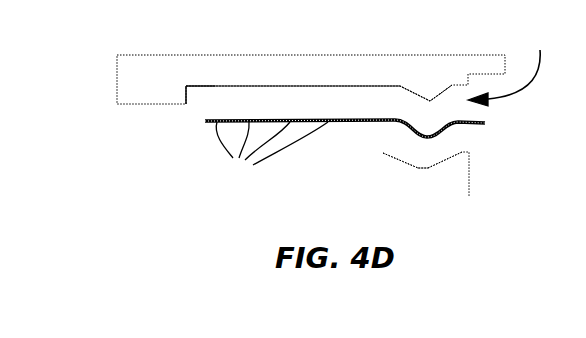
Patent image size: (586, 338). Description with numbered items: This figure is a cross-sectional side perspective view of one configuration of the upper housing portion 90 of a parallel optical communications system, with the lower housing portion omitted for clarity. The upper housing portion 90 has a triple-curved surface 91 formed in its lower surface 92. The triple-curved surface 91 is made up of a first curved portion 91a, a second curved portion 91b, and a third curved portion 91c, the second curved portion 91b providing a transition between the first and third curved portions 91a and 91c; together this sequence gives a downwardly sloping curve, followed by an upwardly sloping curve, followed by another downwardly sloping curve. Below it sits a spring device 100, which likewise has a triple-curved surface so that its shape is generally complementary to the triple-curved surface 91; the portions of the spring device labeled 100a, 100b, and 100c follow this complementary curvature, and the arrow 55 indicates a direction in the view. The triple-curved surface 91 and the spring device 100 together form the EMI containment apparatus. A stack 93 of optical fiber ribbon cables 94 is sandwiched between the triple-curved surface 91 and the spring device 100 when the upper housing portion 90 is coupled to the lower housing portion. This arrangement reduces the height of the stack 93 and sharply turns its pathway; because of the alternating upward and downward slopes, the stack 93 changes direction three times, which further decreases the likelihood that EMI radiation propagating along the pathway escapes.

The upper housing portion 90 is at (385, 56).
The triple-curved surface 91 is at (435, 101).
The first curved portion 91a is at (403, 88).
The second curved portion 91b is at (427, 103).
The third curved portion 91c is at (452, 90).
The lower surface 92 is at (200, 86).
The stack 93 is at (478, 121).
The optical fiber ribbon cables 94 is at (272, 153).
The spring device 100 is at (470, 170).
The first inclined surface 100a is at (397, 152).
The bottom surface 100b is at (427, 170).
The second inclined surface 100c is at (468, 153).
The insertion direction 55 is at (510, 68).